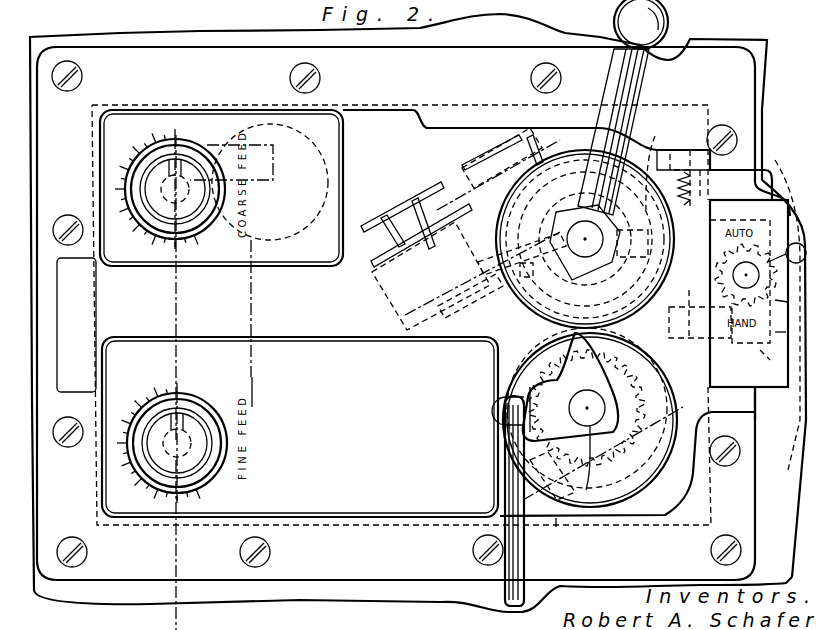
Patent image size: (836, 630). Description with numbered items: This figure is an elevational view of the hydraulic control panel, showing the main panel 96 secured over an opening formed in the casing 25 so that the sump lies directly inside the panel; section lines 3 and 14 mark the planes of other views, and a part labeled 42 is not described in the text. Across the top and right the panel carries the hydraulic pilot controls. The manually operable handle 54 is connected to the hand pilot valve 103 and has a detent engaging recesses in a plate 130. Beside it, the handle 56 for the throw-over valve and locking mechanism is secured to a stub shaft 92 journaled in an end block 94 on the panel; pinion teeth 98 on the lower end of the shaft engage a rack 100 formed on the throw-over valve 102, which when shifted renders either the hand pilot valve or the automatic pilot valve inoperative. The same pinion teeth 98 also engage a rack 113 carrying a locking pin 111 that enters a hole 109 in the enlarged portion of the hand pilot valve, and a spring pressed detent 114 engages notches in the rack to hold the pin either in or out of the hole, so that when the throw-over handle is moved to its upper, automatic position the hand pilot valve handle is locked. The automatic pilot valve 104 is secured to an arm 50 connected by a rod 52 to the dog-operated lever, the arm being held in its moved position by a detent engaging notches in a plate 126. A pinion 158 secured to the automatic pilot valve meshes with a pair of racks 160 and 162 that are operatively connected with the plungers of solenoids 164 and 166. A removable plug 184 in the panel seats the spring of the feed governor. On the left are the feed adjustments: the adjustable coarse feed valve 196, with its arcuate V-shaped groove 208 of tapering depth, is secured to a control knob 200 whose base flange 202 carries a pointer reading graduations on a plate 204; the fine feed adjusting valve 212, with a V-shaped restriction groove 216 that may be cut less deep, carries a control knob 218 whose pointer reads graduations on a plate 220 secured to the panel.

The section line 3- 3 is at (584, 12).
The section line 14- 14 is at (240, 388).
The casing 25 is at (160, 36).
The cover plate 42 is at (478, 40).
The arm 50 is at (643, 447).
The rod 52 is at (526, 563).
The manually operable handle 54 is at (685, 34).
The handle 56 is at (768, 196).
The stub shaft 92 is at (788, 302).
The end block 94 is at (786, 332).
The main panel 96 is at (755, 410).
The pinion teeth 98 is at (774, 185).
The rack 100 is at (784, 378).
The throw-over valve 102 is at (686, 307).
The hand pilot valve 103 is at (600, 248).
The automatic pilot valve 104 is at (620, 493).
The hole 109 is at (650, 241).
The locking pin 111 is at (664, 162).
The rack 113 is at (700, 180).
The spring pressed detent 114 is at (708, 163).
The plate 126 is at (660, 404).
The plate 130 is at (452, 105).
The pinion 158 is at (613, 440).
The rack 160 is at (690, 472).
The rack 162 is at (556, 527).
The solenoid 164 is at (497, 495).
The solenoid 166 is at (557, 530).
The removable plug 184 is at (330, 157).
The coarse feed valve 196 is at (165, 257).
The control knob 200 is at (155, 177).
The base flange 202 is at (195, 155).
The plate 204 is at (327, 137).
The V-shaped groove 208 is at (252, 235).
The fine feed adjusting valve 212 is at (168, 477).
The V-shaped restriction groove 216 is at (188, 440).
The control knob 218 is at (200, 455).
The plate 220 is at (418, 444).